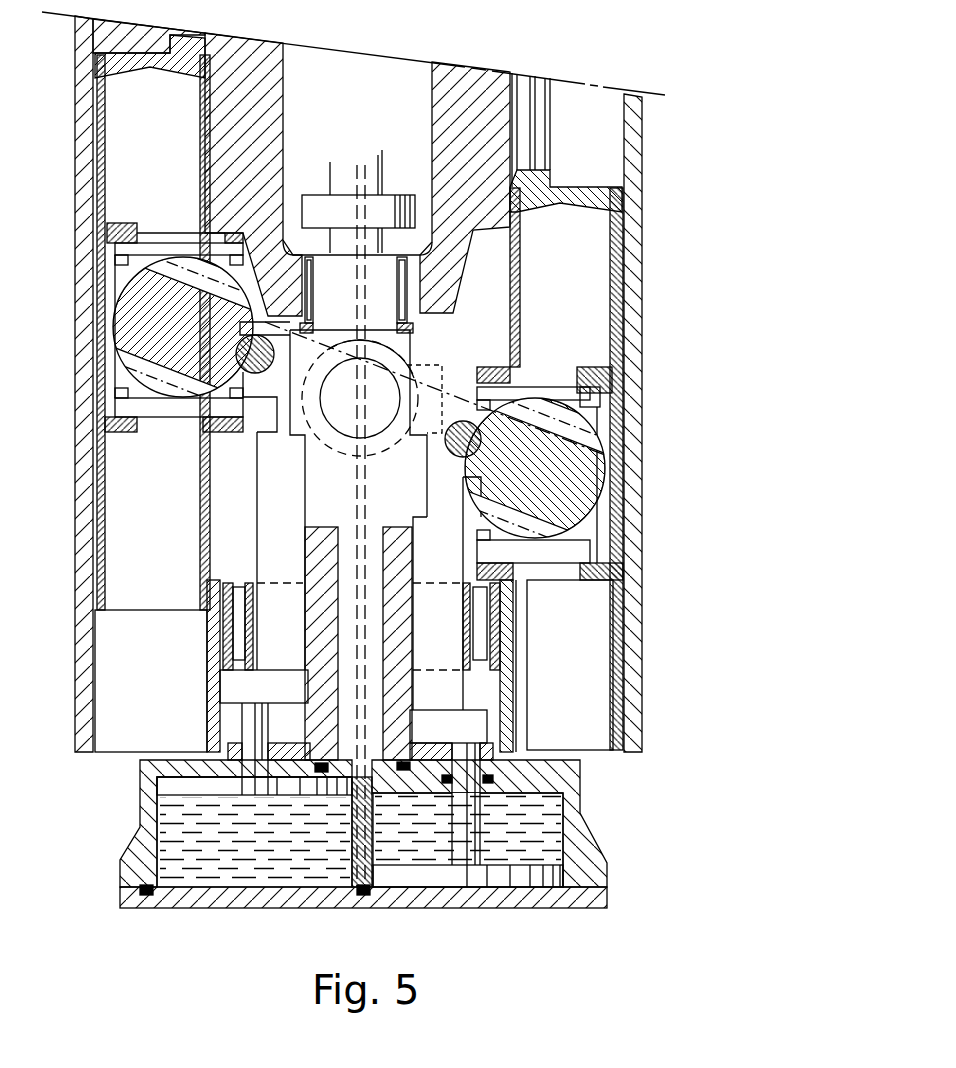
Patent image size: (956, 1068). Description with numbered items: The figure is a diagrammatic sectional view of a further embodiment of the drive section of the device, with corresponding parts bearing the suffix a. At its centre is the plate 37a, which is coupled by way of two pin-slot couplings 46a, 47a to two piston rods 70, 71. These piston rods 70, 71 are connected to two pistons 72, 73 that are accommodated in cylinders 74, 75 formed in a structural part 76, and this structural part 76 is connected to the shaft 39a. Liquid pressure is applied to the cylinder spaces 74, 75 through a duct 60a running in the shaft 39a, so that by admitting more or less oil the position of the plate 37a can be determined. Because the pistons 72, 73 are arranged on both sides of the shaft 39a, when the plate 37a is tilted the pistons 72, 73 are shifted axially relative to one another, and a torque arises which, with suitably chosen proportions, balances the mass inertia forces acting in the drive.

The plate 37a is at (556, 474).
The shaft 39a is at (348, 655).
The pin-slot coupling 46a is at (456, 405).
The pin-slot coupling 47a is at (258, 368).
The duct 60a is at (363, 273).
The piston rod 70 is at (440, 517).
The piston rod 71 is at (278, 490).
The piston 72 is at (547, 874).
The piston 73 is at (178, 786).
The cylinder 74 is at (541, 815).
The cylinder 75 is at (190, 842).
The structural part 76 is at (148, 812).